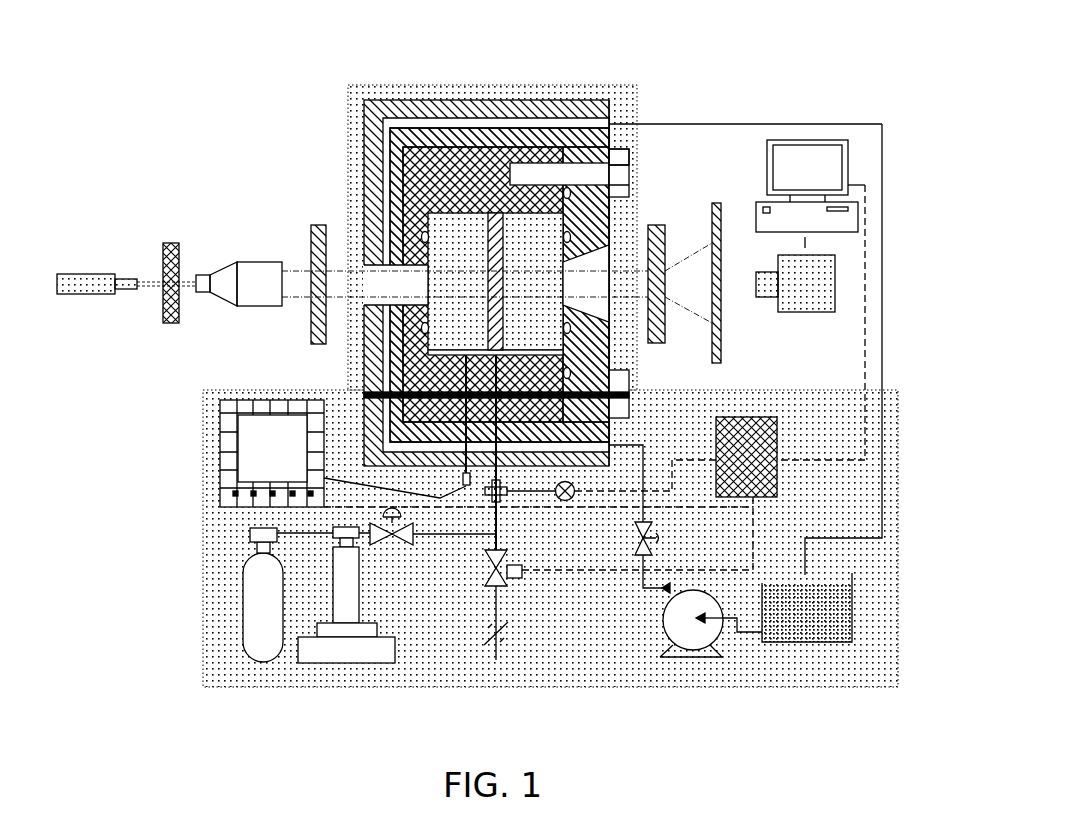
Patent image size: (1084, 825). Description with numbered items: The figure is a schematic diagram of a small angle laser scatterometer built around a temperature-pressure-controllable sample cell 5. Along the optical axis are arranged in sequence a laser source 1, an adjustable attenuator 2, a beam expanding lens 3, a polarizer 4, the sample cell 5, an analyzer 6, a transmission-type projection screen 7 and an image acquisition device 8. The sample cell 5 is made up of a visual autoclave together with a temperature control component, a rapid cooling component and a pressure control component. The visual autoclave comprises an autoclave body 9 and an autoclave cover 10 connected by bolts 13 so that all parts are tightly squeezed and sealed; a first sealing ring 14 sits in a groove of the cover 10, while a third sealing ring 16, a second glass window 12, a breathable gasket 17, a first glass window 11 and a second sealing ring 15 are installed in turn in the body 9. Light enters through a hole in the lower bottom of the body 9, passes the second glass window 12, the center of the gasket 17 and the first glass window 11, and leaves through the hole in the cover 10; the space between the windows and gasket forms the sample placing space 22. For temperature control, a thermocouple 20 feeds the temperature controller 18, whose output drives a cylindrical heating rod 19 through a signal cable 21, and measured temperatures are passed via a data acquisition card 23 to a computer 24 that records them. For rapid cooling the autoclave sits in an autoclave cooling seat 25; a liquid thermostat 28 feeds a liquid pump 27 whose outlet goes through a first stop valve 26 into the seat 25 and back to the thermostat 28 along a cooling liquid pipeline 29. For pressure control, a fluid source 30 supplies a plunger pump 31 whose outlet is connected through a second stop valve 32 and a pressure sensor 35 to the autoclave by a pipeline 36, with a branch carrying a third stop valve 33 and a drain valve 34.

The laser source 1 is at (87, 282).
The adjustable attenuator 2 is at (167, 245).
The beam expanding lens 3 is at (252, 268).
The polarizer 4 is at (318, 243).
The temperature-pressure-controllable sample cell 5 is at (487, 130).
The analyzer 6 is at (665, 225).
The transmission-type projection screen 7 is at (721, 205).
The image acquisition device 8 is at (835, 283).
The autoclave body 9 is at (400, 152).
The autoclave cover 10 is at (617, 175).
The first glass window 11 is at (543, 173).
The second glass window 12 is at (402, 128).
The bolt 13 is at (625, 160).
The first sealing ring 14 is at (575, 197).
The second sealing ring 15 is at (568, 190).
The third sealing ring 16 is at (403, 215).
The breathable gasket 17 is at (505, 150).
The temperature controller 18 is at (252, 463).
The cylindrical heating rod 19 is at (365, 393).
The thermocouple 20 is at (468, 505).
The signal cable 21 is at (300, 392).
The sample placing space 22 is at (450, 245).
The data acquisition card 23 is at (775, 425).
The computer 24 is at (848, 153).
The autoclave cooling seat 25 is at (348, 125).
The first stop valve 26 is at (643, 563).
The liquid pump 27 is at (697, 640).
The liquid thermostat 28 is at (837, 615).
The cooling liquid pipeline 29 is at (882, 477).
The fluid source 30 is at (263, 608).
The plunger pump 31 is at (342, 648).
The second stop valve 32 is at (398, 537).
The third stop valve 33 is at (516, 578).
The drain valve 34 is at (497, 590).
The pressure sensor 35 is at (567, 505).
The pipeline 36 is at (312, 533).